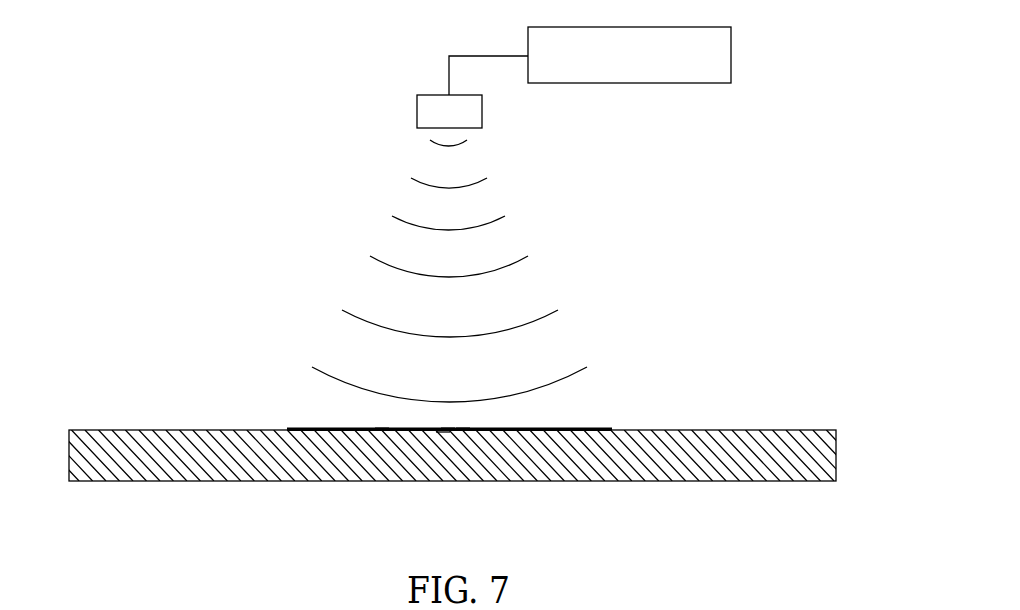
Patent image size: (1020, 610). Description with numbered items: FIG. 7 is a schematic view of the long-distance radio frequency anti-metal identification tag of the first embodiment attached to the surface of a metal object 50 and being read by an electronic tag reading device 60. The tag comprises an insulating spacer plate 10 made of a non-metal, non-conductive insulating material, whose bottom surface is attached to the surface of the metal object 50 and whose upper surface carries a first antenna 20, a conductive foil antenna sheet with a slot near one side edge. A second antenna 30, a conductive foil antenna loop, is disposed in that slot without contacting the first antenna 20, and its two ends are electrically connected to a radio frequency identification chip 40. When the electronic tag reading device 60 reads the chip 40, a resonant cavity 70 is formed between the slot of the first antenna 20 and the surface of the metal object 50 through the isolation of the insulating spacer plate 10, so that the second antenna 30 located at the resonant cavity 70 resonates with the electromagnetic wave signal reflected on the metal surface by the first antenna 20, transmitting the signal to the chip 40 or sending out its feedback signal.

The insulating spacer plate 10 is at (313, 431).
The first antenna 20 is at (382, 427).
The second antenna 30 is at (462, 427).
The radio frequency identification chip 40 is at (448, 427).
The metal object 50 is at (195, 464).
The electronic tag reading device 60 is at (720, 38).
The resonant cavity 70 is at (443, 432).